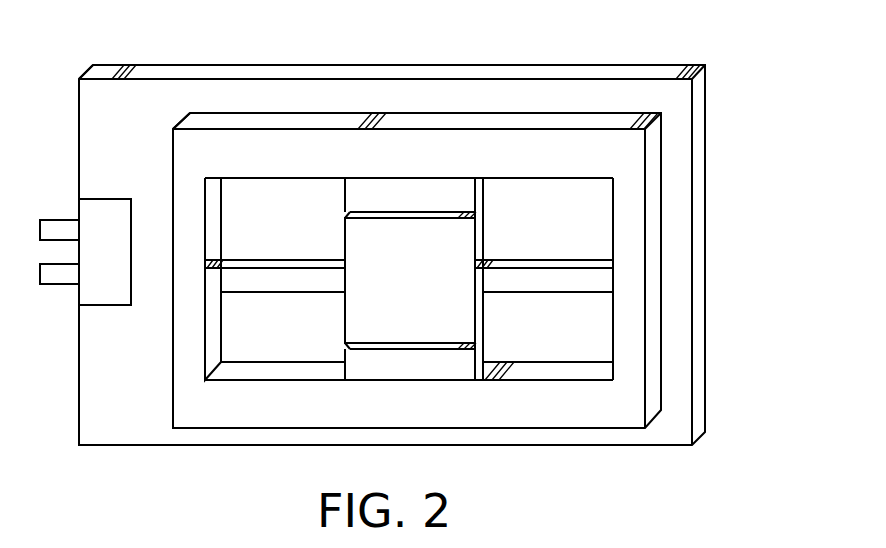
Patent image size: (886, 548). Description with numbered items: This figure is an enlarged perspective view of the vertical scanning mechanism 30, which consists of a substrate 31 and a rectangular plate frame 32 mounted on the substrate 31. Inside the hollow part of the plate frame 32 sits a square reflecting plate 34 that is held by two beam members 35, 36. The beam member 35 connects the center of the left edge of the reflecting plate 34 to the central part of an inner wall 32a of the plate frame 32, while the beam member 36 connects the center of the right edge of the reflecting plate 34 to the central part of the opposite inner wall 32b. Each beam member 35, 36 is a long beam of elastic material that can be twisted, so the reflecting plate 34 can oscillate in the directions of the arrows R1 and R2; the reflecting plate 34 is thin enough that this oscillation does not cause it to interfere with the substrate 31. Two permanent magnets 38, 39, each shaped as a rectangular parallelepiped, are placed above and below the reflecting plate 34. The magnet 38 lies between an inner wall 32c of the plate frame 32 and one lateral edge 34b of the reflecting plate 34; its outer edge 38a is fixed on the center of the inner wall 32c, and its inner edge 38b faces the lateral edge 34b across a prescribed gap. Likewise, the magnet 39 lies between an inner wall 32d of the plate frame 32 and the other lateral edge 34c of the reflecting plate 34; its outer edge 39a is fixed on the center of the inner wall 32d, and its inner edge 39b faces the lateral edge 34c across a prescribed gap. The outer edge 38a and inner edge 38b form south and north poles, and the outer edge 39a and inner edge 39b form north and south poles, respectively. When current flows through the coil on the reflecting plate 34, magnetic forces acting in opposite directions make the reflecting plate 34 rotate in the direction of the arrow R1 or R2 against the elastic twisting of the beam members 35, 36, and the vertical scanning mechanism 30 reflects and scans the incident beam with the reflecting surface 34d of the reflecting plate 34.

The vertical scanning mechanism 30 is at (659, 49).
The substrate 31 is at (208, 62).
The plate frame 32 is at (236, 434).
The inner wall 32a is at (212, 330).
The inner wall 32b is at (612, 322).
The inner wall 32c is at (300, 374).
The inner wall 32d is at (590, 173).
The reflecting plate 34 is at (544, 279).
The lateral edge 34b is at (548, 327).
The lateral edge 34c is at (485, 216).
The reflecting surface 34d is at (349, 233).
The beam member 35 is at (246, 254).
The beam member 36 is at (548, 327).
The magnet 38 is at (410, 362).
The outer edge 38a is at (372, 378).
The inner edge 38b is at (398, 350).
The magnet 39 is at (412, 199).
The outer edge 39a is at (420, 187).
The inner edge 39b is at (407, 209).
The arrow R1 is at (538, 245).
The arrow R2 is at (561, 285).